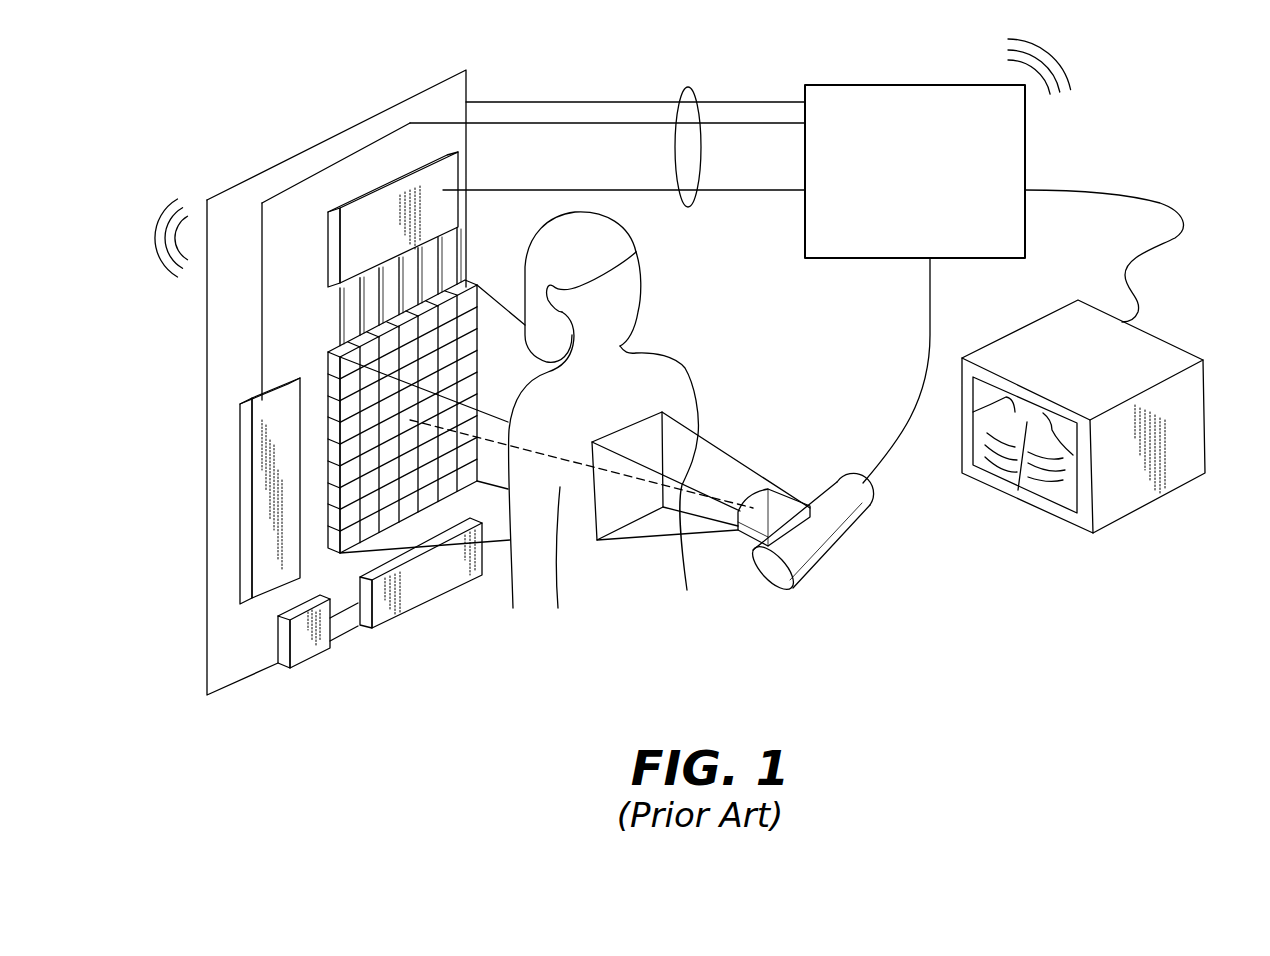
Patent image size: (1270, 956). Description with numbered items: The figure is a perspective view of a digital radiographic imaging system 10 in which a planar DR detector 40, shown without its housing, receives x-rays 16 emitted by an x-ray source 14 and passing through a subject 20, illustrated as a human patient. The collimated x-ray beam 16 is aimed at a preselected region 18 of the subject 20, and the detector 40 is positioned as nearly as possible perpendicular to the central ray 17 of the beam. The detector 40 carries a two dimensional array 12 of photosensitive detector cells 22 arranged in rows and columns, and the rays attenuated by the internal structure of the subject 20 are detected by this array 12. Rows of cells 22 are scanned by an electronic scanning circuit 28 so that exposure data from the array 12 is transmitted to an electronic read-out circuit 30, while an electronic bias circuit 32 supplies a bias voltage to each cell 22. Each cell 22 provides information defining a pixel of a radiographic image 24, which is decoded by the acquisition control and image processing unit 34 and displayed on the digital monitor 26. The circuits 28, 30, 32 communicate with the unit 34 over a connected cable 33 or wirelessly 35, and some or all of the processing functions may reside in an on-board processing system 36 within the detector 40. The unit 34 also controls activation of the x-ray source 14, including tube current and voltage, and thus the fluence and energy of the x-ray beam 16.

The digital radiographic imaging system 10 is at (1180, 158).
The two dimensional array 12 is at (468, 278).
The x-ray source 14 is at (855, 535).
The x-rays 16 is at (722, 452).
The central ray 17 is at (701, 500).
The preselected region 18 is at (633, 417).
The subject 20 is at (647, 352).
The detector cells 22 is at (370, 358).
The radiographic image 24 is at (1030, 478).
The digital monitor 26 is at (1148, 328).
The electronic scanning circuit 28 is at (270, 580).
The electronic read-out circuit 30 is at (372, 210).
The electronic bias circuit 32 is at (410, 600).
The connected cable 33 is at (690, 88).
The acquisition control and image processing unit 34 is at (1027, 137).
The wireless transmission 35 is at (154, 241).
The on-board processing system 36 is at (300, 650).
The DR detector 40 is at (234, 177).